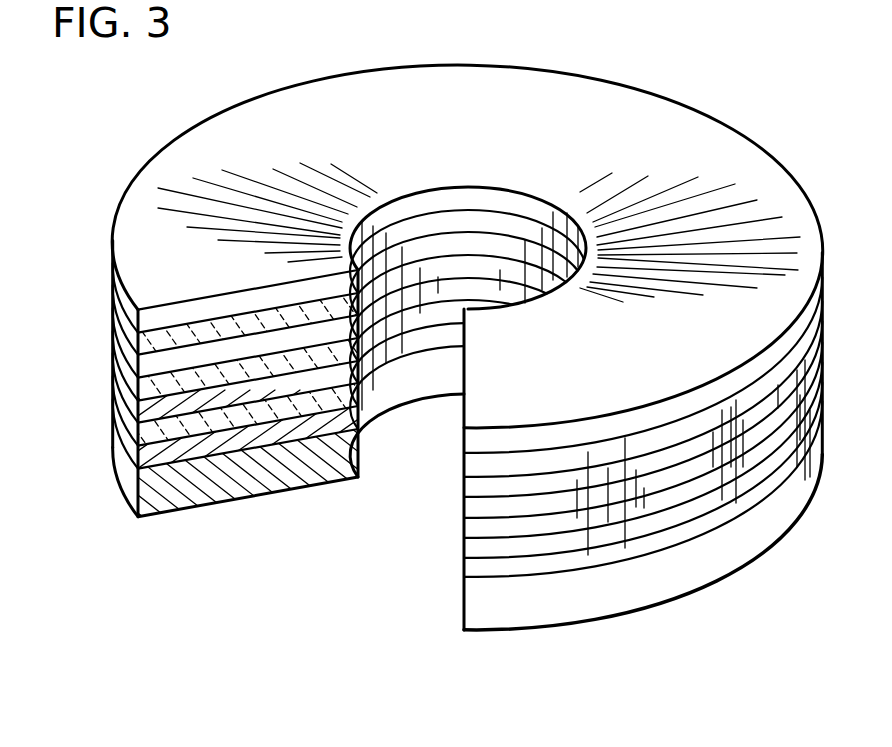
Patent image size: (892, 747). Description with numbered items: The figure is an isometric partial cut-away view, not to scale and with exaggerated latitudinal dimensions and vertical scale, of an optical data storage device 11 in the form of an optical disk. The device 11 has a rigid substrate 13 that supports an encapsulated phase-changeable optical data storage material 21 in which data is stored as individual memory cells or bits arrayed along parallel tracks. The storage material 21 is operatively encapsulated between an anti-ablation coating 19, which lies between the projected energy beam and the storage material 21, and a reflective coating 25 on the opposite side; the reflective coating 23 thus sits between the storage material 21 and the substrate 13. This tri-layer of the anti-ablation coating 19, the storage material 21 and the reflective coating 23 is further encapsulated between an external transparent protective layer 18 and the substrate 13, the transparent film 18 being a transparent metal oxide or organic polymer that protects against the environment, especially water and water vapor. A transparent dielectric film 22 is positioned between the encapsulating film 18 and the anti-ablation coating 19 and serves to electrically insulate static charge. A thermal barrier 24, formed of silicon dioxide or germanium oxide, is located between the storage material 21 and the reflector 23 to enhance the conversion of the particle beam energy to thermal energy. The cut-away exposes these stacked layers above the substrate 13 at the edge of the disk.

The optical data storage device 11 is at (376, 505).
The rigid substrate 13 is at (160, 485).
The external transparent protective layer 18 is at (157, 317).
The anti-ablation coating 19 is at (152, 370).
The phase-changeable optical data storage material 21 is at (150, 390).
The transparent dielectric film 22 is at (150, 345).
The reflective coating 23 is at (140, 425).
The thermal barrier 24 is at (140, 404).
The reflective coating 25 is at (142, 452).